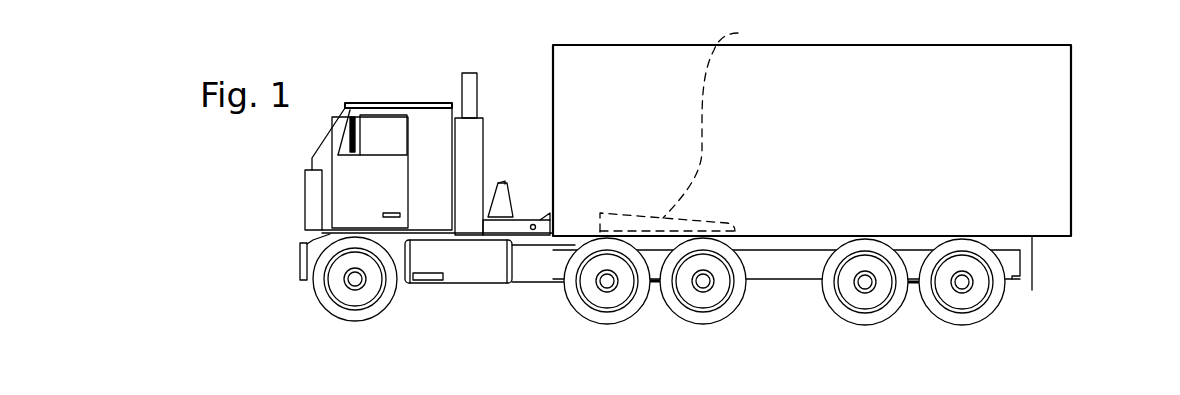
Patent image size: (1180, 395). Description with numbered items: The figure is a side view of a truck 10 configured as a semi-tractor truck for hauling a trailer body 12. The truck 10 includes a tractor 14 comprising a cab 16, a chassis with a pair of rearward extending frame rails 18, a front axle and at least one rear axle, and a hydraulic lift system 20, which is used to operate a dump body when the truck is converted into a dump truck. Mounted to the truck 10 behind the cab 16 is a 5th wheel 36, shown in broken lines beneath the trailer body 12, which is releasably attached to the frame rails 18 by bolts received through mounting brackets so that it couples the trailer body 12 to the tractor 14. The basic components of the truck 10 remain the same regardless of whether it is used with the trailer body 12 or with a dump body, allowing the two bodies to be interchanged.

The truck 10 is at (607, 206).
The trailer body 12 is at (1071, 98).
The tractor 14 is at (366, 199).
The cab 16 is at (378, 103).
The frame rails 18 is at (800, 240).
The hydraulic lift system 20 is at (522, 148).
The 5th wheel 36 is at (740, 33).